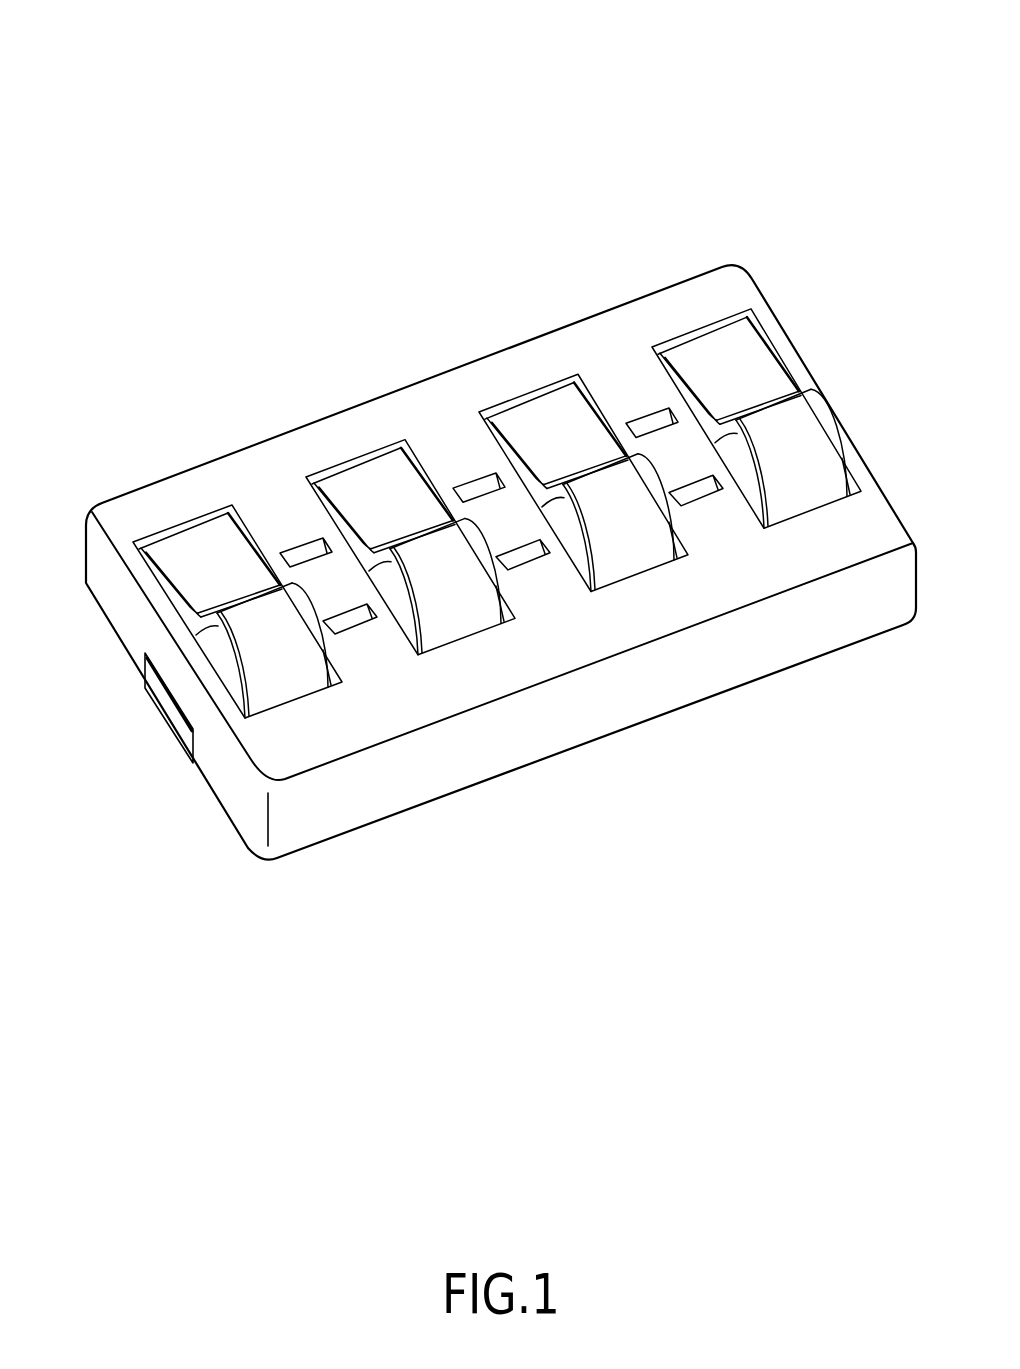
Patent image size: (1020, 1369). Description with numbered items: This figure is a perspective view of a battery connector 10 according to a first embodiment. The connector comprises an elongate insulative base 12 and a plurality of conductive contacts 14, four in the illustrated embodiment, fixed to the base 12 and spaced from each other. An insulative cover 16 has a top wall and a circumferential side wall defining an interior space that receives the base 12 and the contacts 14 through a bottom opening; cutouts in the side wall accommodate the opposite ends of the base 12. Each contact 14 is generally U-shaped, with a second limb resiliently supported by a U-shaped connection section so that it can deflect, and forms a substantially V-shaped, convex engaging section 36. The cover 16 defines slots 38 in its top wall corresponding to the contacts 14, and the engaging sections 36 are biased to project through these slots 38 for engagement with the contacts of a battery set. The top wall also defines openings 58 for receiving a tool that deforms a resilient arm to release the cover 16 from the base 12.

The battery connector 10 is at (830, 128).
The insulative base 12 is at (167, 728).
The conductive contacts 14 is at (728, 368).
The insulative cover 16 is at (672, 285).
The engaging section 36 is at (260, 621).
The slots 38 is at (182, 518).
The opening 58 is at (650, 423).